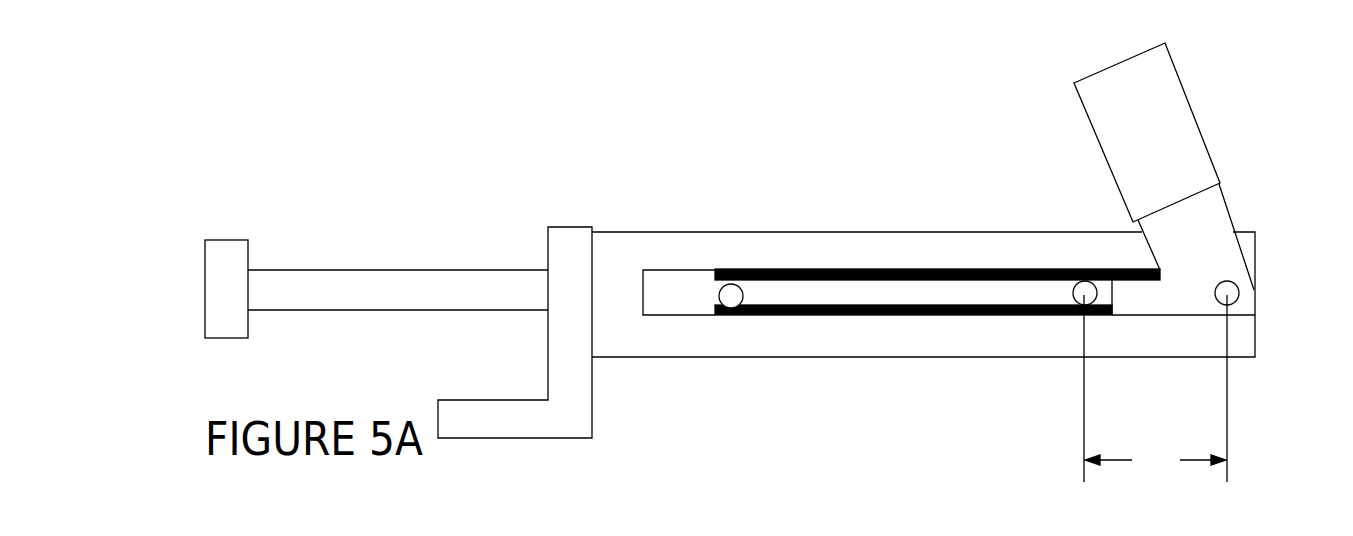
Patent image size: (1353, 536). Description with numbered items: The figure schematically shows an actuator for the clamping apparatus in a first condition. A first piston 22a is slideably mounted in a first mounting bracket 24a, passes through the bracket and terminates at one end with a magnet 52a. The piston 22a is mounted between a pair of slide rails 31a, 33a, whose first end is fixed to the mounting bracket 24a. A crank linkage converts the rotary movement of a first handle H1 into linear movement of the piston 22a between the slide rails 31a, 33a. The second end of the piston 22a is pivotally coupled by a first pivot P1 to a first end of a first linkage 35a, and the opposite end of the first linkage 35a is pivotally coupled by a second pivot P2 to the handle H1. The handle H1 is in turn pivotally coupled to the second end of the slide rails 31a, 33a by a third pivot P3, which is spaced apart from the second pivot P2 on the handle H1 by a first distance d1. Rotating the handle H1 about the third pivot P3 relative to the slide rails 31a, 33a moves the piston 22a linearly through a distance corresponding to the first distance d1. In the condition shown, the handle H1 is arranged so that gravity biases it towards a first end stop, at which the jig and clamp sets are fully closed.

The magnet 52a is at (225, 267).
The first piston 22a is at (387, 290).
The first mounting bracket 24a is at (565, 413).
The slide rail 31a is at (772, 252).
The slide rail 33a is at (805, 342).
The first linkage 35a is at (950, 293).
The first handle H1 is at (1160, 155).
The first pivot P1 is at (733, 300).
The second pivot P2 is at (1097, 293).
The third pivot P3 is at (1237, 292).
The first distance d1 is at (1155, 463).